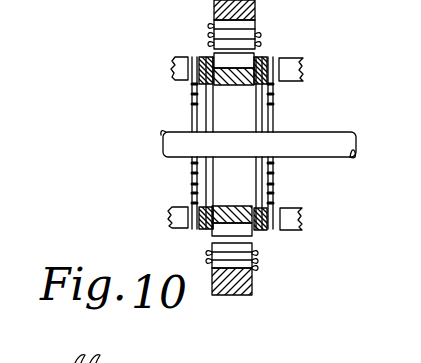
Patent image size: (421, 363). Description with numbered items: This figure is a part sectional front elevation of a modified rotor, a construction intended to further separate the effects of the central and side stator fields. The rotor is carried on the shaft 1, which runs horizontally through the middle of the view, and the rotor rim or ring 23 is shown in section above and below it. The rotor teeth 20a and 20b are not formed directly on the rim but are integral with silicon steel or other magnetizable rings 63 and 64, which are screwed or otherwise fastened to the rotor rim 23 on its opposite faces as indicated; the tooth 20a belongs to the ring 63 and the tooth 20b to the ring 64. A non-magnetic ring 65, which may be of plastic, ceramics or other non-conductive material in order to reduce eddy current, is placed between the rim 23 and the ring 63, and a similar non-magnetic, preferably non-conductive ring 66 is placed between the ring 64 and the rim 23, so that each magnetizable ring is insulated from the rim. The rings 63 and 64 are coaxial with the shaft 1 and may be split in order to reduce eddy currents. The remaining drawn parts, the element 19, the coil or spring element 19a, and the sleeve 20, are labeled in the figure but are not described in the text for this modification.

The shaft 1 is at (330, 132).
The bearing support block 19 is at (173, 68).
The spring 19a is at (224, 34).
The bearing sleeve 20 is at (233, 144).
The rotor tooth 20a is at (271, 58).
The rotor tooth 20b is at (191, 79).
The rotor rim 23 is at (239, 85).
The magnetizable ring 63 is at (261, 59).
The magnetizable ring 64 is at (200, 230).
The non-magnetic ring 65 is at (262, 232).
The non-magnetic ring 66 is at (208, 58).